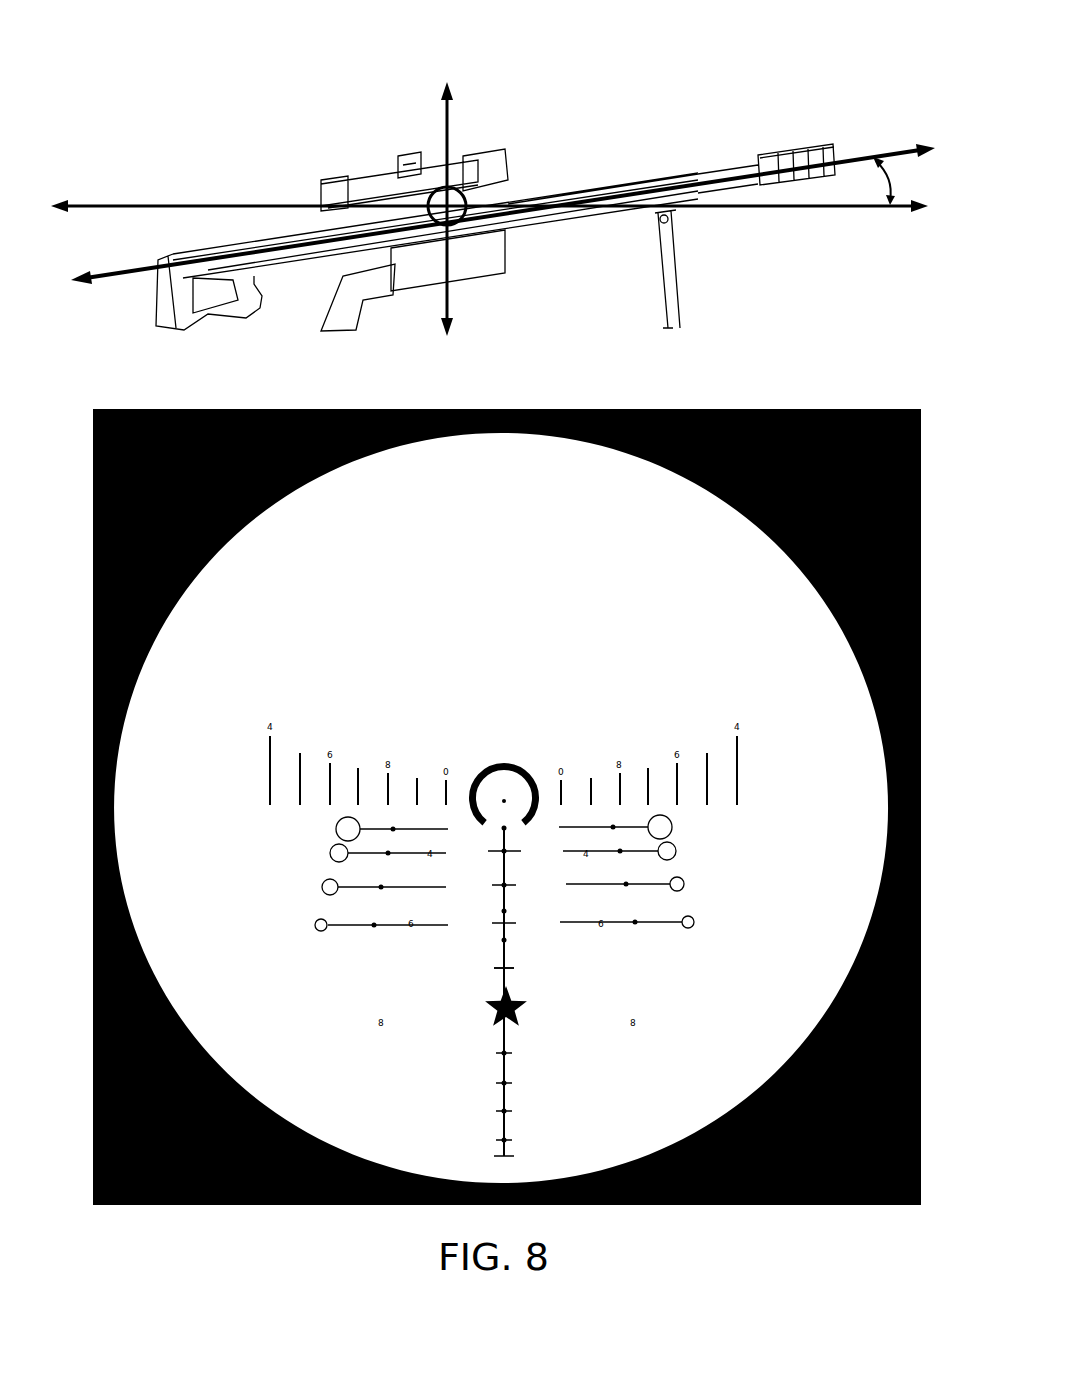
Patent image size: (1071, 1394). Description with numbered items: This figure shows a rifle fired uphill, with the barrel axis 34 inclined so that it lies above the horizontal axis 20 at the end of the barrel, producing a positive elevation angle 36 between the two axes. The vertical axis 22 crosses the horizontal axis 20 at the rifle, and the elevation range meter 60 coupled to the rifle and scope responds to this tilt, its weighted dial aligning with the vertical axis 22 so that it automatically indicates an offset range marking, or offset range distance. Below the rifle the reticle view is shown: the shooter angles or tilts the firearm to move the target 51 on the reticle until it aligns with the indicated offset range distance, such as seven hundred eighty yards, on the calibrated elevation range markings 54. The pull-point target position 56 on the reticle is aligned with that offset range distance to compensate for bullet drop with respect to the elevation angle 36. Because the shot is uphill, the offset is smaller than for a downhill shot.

The horizontal axis 20 is at (843, 200).
The vertical axis 22 is at (438, 110).
The barrel axis 34 is at (823, 168).
The elevation angle 36 is at (880, 178).
The elevation range meter 60 is at (456, 184).
The calibrated elevation range markings 54 is at (650, 912).
The target 51 is at (482, 995).
The pull-point target position 56 is at (512, 1002).